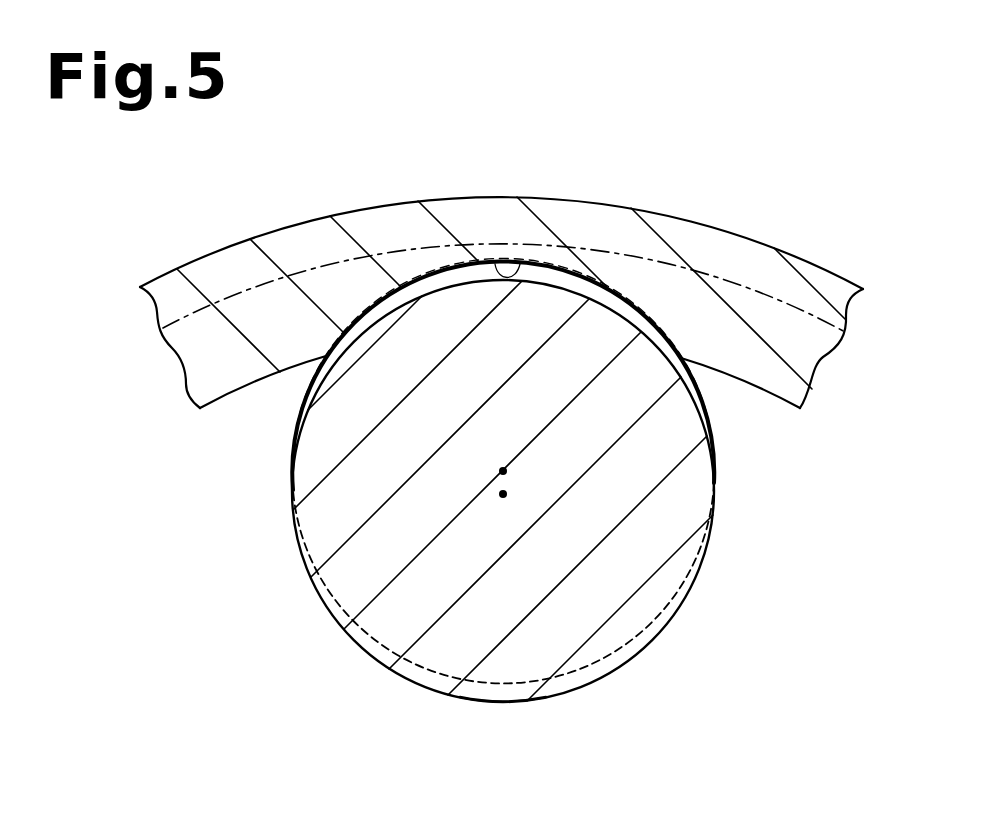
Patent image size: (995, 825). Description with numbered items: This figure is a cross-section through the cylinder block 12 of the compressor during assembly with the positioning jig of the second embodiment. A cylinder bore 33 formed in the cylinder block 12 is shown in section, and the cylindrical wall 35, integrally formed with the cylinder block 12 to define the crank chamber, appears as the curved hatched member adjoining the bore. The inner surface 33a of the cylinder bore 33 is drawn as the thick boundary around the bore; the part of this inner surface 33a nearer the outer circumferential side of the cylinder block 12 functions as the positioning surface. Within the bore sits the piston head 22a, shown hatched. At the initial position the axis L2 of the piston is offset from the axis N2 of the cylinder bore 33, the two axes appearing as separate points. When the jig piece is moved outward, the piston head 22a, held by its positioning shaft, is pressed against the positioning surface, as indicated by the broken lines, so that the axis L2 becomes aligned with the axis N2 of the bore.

The cylinder block 12 is at (709, 226).
The cylinder bore 33 is at (450, 278).
The inner surface of the cylinder bore 33a is at (505, 262).
The cylindrical wall 35 is at (182, 342).
The axis of the cylinder bore N2 is at (503, 471).
The axis of the piston L2 is at (503, 494).
The piston head 22a is at (500, 683).